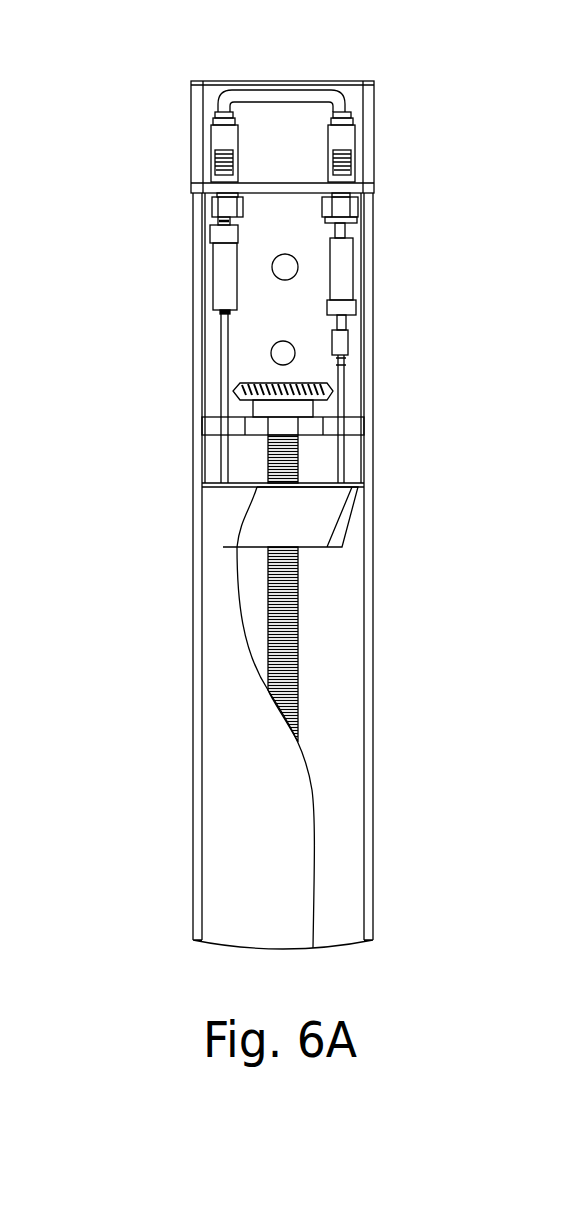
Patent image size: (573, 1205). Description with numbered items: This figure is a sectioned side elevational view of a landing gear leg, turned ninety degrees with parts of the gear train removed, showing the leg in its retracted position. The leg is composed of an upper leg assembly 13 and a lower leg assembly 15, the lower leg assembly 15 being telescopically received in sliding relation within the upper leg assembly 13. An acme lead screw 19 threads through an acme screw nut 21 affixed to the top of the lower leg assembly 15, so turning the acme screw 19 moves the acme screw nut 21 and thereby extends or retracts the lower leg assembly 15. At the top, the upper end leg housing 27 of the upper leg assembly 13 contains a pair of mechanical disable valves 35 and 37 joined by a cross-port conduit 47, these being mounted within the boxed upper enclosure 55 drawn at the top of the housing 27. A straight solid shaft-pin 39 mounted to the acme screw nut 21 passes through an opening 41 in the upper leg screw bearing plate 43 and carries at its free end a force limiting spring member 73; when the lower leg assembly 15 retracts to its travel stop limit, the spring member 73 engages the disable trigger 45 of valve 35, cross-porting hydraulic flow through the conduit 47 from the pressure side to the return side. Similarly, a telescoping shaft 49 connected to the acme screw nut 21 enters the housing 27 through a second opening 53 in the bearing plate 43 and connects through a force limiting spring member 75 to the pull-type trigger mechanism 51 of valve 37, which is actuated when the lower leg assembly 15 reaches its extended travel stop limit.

The upper leg assembly 13 is at (373, 840).
The lower leg assembly 15 is at (225, 880).
The acme lead screw 19 is at (268, 567).
The acme screw nut 21 is at (303, 512).
The upper end leg housing 27 is at (373, 272).
The mechanical disable valve 35 is at (222, 158).
The mechanical pull-type cartridge disable valve 37 is at (345, 160).
The straight solid shaft-pin 39 is at (222, 320).
The opening 41 is at (205, 425).
The upper leg screw bearing plate 43 is at (313, 425).
The disable trigger 45 is at (222, 222).
The cross-port conduit 47 is at (323, 88).
The telescoping shaft 49 is at (345, 405).
The mechanical pull-type trigger mechanism 51 is at (342, 228).
The second opening 53 is at (362, 413).
The top housing box 55 is at (373, 85).
The force limiting spring member 73 is at (225, 262).
The force limiting spring member 75 is at (350, 255).